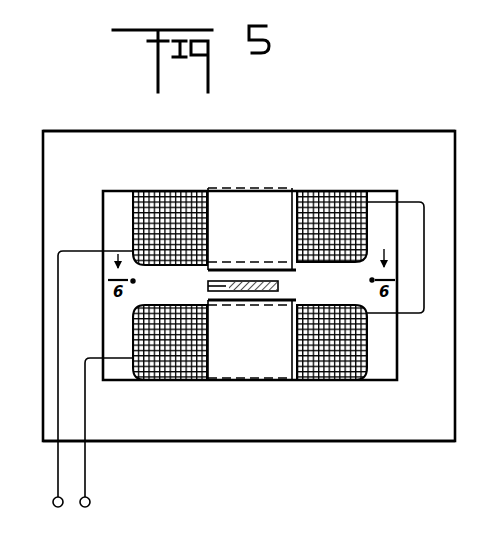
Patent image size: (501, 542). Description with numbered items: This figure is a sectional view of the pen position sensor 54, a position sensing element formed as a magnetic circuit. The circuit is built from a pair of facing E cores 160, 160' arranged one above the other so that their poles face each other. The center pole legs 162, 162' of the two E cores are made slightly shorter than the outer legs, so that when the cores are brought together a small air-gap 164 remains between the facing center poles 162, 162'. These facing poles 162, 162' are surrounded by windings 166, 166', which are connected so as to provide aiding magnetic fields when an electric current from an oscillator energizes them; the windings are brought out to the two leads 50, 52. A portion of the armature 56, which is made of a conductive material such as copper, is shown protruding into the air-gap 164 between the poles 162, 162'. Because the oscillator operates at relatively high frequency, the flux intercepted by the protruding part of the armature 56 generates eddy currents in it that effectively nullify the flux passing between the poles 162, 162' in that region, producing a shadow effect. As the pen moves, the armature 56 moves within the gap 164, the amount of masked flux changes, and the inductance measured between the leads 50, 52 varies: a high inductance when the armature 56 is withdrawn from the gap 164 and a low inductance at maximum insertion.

The pen position sensor 54 is at (374, 98).
The E core 160 is at (249, 120).
The E core 160' is at (249, 451).
The winding 166 is at (211, 228).
The winding 166' is at (213, 342).
The center pole leg 162 is at (252, 229).
The center pole leg 162' is at (252, 340).
The air-gap 164 is at (282, 292).
The armature 56 is at (207, 286).
The lead 50 is at (56, 458).
The lead 52 is at (86, 457).